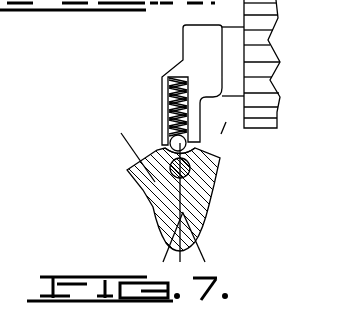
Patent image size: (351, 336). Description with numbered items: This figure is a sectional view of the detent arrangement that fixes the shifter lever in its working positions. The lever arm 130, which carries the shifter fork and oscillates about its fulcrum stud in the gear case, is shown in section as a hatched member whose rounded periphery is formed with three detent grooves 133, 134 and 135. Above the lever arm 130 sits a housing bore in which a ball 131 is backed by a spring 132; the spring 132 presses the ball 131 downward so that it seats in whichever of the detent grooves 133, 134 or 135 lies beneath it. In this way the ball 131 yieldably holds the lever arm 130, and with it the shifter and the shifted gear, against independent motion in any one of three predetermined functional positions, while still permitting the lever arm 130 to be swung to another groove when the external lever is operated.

The lever arm 130 is at (203, 202).
The ball 131 is at (190, 142).
The spring 132 is at (163, 96).
The detent groove 133 is at (140, 163).
The detent groove 134 is at (160, 152).
The detent groove 135 is at (212, 150).